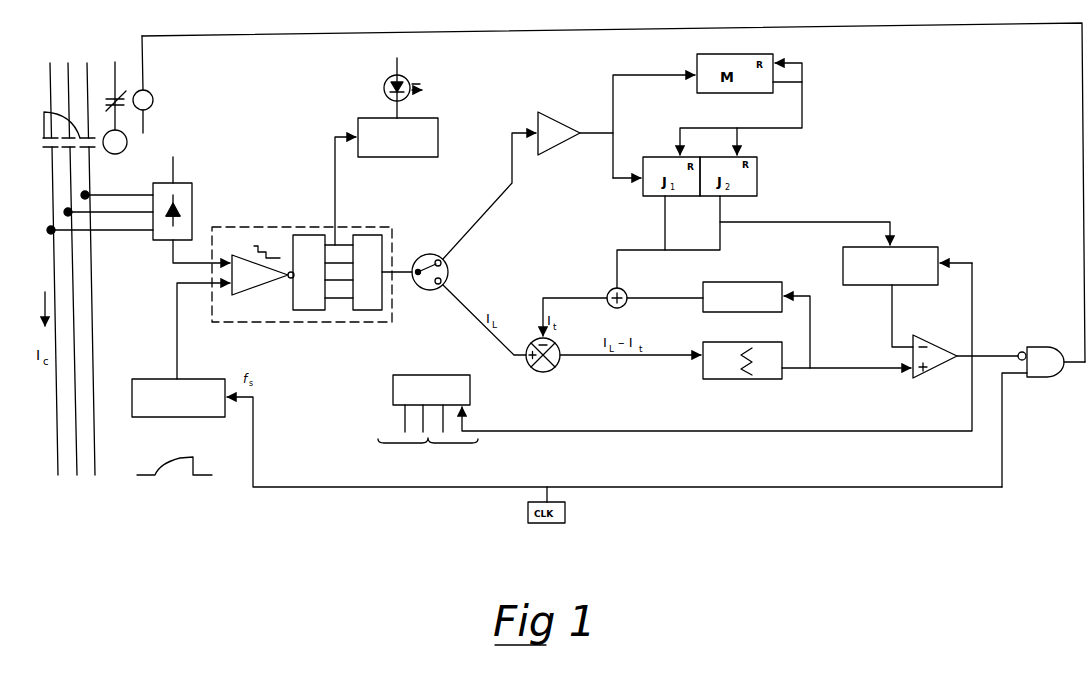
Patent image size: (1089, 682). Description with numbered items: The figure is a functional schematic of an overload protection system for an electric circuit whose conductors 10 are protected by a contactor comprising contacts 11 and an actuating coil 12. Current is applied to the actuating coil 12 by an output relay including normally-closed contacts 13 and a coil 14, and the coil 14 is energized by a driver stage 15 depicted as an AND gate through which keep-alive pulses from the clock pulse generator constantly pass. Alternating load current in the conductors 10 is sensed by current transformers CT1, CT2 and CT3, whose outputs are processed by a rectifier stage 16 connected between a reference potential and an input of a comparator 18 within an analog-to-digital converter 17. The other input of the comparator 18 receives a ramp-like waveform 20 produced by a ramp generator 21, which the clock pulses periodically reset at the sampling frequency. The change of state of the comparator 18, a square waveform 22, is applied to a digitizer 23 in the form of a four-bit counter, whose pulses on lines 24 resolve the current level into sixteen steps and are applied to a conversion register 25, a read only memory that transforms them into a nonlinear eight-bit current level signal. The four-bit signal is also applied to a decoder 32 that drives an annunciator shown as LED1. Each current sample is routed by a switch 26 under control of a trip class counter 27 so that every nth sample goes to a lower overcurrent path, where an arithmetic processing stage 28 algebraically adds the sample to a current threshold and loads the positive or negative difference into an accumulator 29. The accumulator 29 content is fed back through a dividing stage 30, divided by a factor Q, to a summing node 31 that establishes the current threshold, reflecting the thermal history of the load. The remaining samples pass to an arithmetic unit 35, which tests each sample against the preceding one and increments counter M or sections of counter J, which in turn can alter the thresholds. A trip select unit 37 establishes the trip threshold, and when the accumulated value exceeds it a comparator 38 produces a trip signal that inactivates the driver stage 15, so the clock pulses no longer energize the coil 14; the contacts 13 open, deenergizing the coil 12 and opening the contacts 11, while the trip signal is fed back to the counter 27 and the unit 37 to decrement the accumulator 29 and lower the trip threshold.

The conductors 10 is at (83, 480).
The contacts 11 is at (44, 112).
The actuating coil 12 is at (122, 152).
The contacts 13 is at (111, 96).
The coil 14 is at (150, 93).
The driver stage 15 is at (1058, 335).
The rectifier stage 16 is at (192, 195).
The analog-to-digital converter 17 is at (265, 227).
The comparator 18 is at (250, 290).
The ramp-like waveform 20 is at (155, 475).
The ramp generator 21 is at (136, 379).
The square waveform 22 is at (256, 246).
The digitizer 23 is at (315, 310).
The lines 24 is at (335, 230).
The conversion register 25 is at (368, 310).
The switch 26 is at (420, 257).
The counter 27 is at (470, 392).
The arithmetic processing stage 28 is at (553, 368).
The accumulator 29 is at (735, 379).
The dividing stage 30 is at (760, 282).
The summing node 31 is at (625, 291).
The decoder 32 is at (432, 118).
The arithmetic unit 35 is at (556, 122).
The TRIP SELECT unit 37 is at (912, 247).
The comparator 38 is at (930, 339).
The current transformer CT1 is at (47, 228).
The current transformer CT2 is at (64, 210).
The current transformer CT3 is at (89, 190).
The annunciator stage LED1 is at (384, 88).